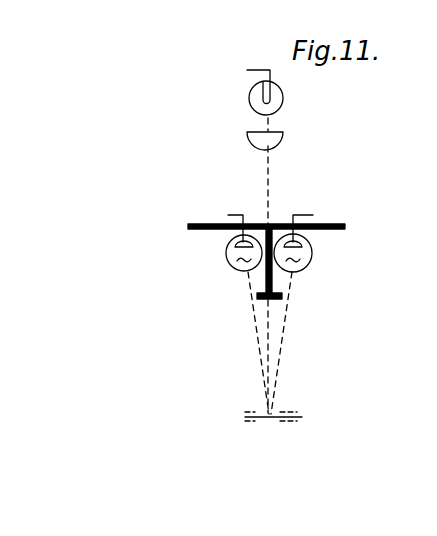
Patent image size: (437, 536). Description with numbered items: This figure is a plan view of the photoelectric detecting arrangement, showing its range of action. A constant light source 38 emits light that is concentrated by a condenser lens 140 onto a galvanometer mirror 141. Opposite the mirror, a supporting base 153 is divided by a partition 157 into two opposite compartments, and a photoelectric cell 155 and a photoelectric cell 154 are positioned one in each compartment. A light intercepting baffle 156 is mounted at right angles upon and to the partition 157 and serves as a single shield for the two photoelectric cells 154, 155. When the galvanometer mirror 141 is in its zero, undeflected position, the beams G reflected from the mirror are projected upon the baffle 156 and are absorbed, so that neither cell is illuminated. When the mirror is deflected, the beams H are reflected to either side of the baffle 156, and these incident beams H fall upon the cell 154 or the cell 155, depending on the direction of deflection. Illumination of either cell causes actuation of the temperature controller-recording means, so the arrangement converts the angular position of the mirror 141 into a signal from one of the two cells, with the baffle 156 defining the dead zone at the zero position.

The constant light source 38 is at (283, 99).
The condenser lens 140 is at (287, 138).
The supporting base 153 is at (330, 223).
The photoelectric cell 154 is at (313, 247).
The photoelectric cell 155 is at (226, 263).
The light intercepting baffle 156 is at (257, 300).
The partition 157 is at (266, 279).
The galvanometer mirror 141 is at (272, 418).
The beams G is at (272, 312).
The beams H is at (253, 339).